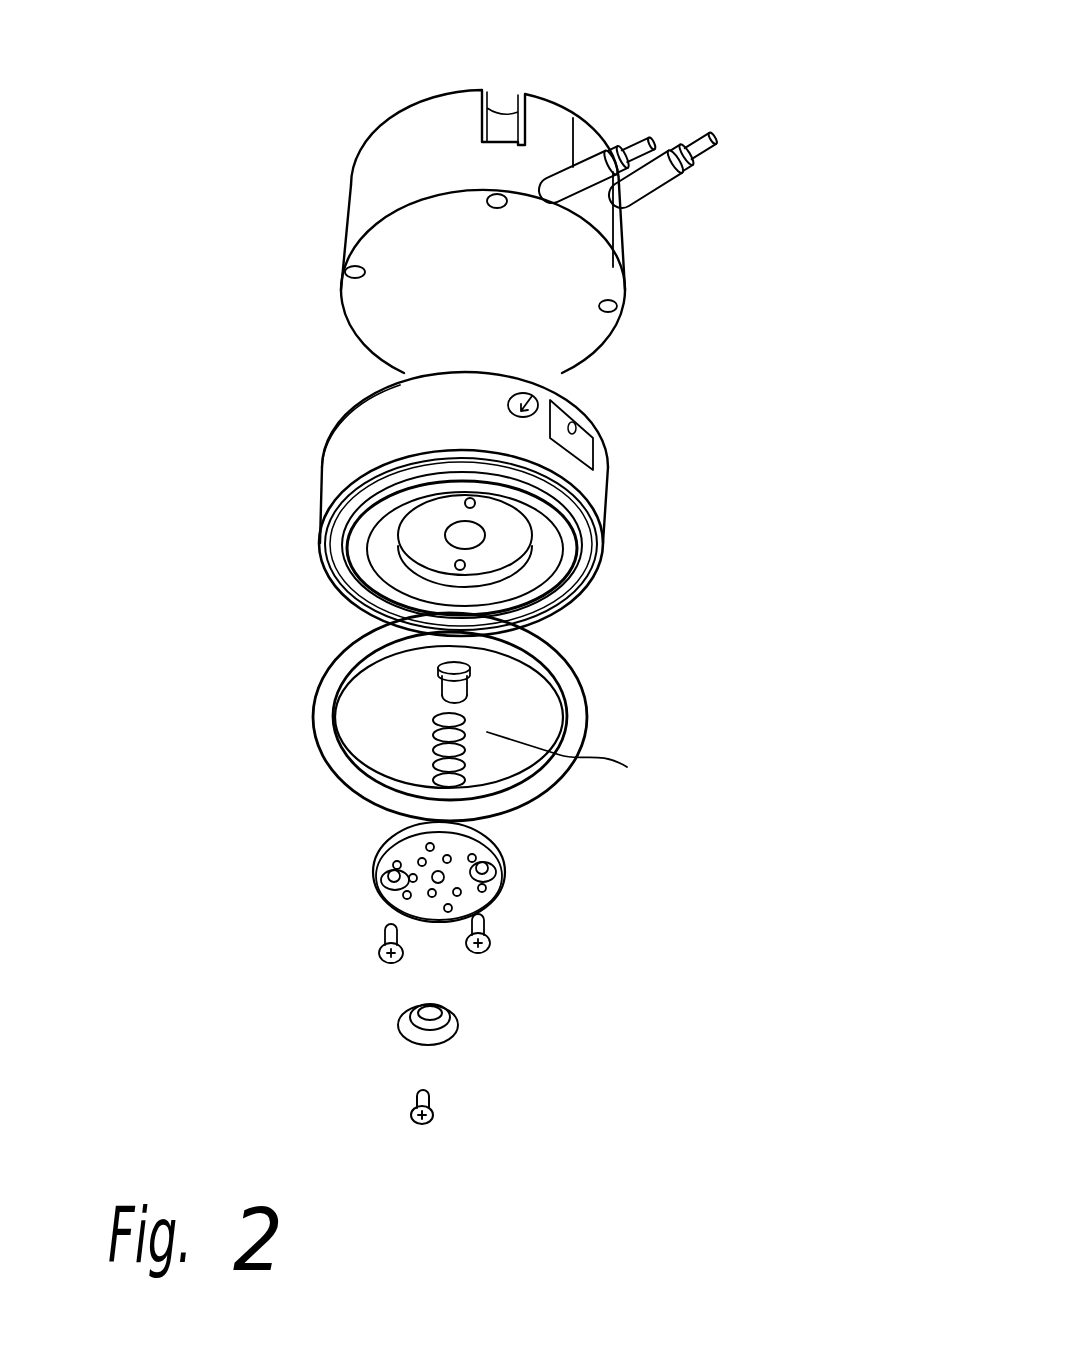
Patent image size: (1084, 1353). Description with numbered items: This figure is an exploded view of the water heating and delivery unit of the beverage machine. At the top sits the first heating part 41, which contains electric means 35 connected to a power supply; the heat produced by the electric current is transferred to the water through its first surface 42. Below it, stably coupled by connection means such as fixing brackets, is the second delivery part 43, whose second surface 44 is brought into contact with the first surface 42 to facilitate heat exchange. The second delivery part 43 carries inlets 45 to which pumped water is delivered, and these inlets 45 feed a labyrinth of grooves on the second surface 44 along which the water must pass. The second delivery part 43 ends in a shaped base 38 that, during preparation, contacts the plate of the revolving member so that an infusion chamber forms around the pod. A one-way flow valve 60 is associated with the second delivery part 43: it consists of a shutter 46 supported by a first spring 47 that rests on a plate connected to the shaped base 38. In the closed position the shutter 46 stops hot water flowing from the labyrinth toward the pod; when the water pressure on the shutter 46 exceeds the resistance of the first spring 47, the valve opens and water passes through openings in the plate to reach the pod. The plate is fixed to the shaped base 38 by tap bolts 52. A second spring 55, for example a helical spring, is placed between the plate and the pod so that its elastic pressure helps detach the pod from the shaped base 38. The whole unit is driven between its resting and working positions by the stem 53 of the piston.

The electric means 35 is at (675, 150).
The first heating part 41 is at (600, 273).
The first surface 42 is at (387, 303).
The second delivery part 43 is at (593, 488).
The second surface 44 is at (357, 403).
The inlets 45 is at (540, 395).
The shutter 46 is at (437, 690).
The first spring 47 is at (430, 762).
The shaped base 38 is at (553, 587).
The stem 53 is at (320, 727).
The one-way flow valve 60 is at (584, 769).
The tap bolts 52 is at (485, 923).
The second spring 55 is at (458, 1030).